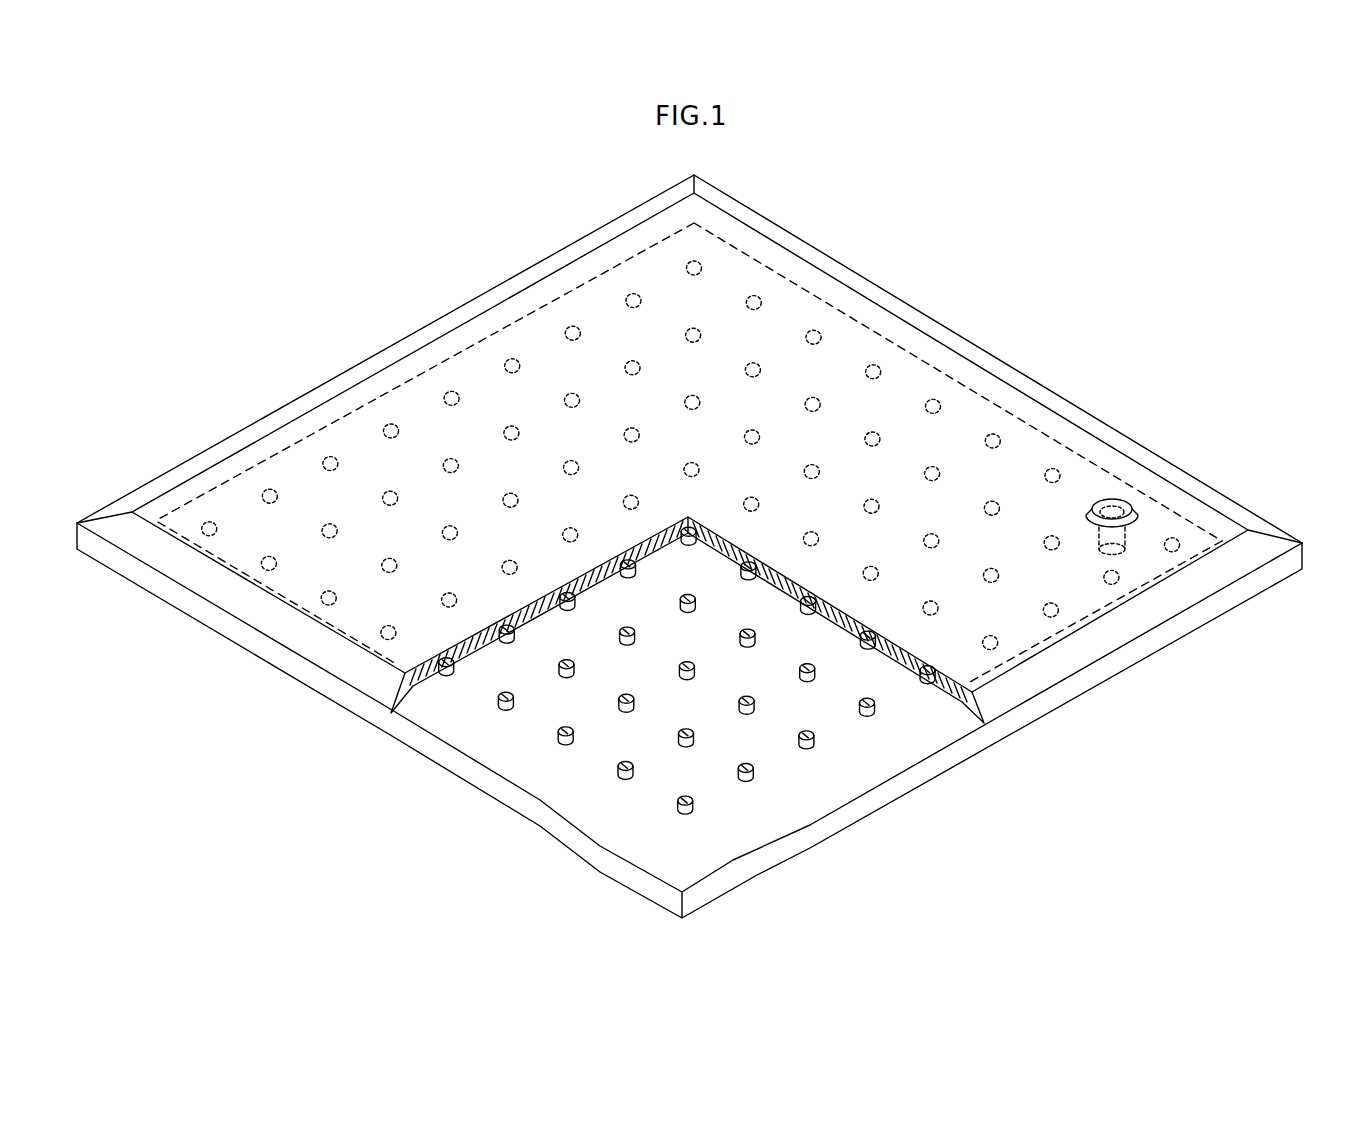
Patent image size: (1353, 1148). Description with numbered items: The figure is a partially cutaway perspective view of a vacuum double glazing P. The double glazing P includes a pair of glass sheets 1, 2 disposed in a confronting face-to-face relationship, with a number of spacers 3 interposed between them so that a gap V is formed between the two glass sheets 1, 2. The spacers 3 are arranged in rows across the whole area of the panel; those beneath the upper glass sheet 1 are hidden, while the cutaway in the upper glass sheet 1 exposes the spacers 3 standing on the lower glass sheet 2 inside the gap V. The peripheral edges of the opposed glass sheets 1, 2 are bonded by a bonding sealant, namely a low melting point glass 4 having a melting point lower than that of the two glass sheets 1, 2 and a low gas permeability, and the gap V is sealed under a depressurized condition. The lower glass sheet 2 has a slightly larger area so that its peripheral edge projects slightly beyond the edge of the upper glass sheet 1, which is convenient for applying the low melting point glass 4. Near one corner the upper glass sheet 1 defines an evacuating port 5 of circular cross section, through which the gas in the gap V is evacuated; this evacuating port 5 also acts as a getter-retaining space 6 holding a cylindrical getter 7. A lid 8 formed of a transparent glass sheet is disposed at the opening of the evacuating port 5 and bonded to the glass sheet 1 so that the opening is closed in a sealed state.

The double glazing P is at (314, 313).
The glass sheet 1 is at (958, 424).
The glass sheet 2 is at (876, 797).
The spacers 3 is at (507, 366).
The low melting point glass 4 is at (1165, 607).
The evacuating port 5 is at (1170, 462).
The getter-retaining space 6 is at (702, 561).
The getter 7 is at (1092, 548).
The lid 8 is at (1110, 500).
The gap V is at (477, 660).